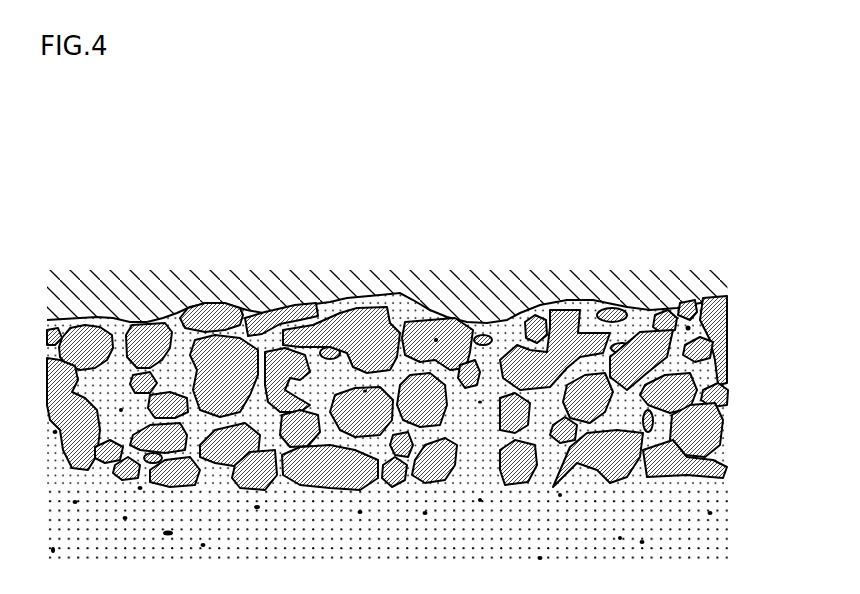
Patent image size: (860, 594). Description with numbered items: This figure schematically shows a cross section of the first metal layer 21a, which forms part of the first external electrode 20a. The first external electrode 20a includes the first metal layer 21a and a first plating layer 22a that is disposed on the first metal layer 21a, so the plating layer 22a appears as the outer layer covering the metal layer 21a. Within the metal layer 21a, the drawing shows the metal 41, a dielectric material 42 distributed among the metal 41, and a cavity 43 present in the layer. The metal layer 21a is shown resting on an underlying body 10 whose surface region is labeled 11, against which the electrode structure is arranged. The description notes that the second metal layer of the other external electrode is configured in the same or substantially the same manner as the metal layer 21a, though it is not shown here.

The first external electrode 20a is at (440, 301).
The first plating layer 22a is at (700, 285).
The first metal layer 21a is at (440, 384).
The metal 41 is at (720, 428).
The dielectric material 42 is at (720, 447).
The cavity 43 is at (690, 327).
The substrate 10 is at (433, 526).
The substrate surface 11 is at (712, 540).